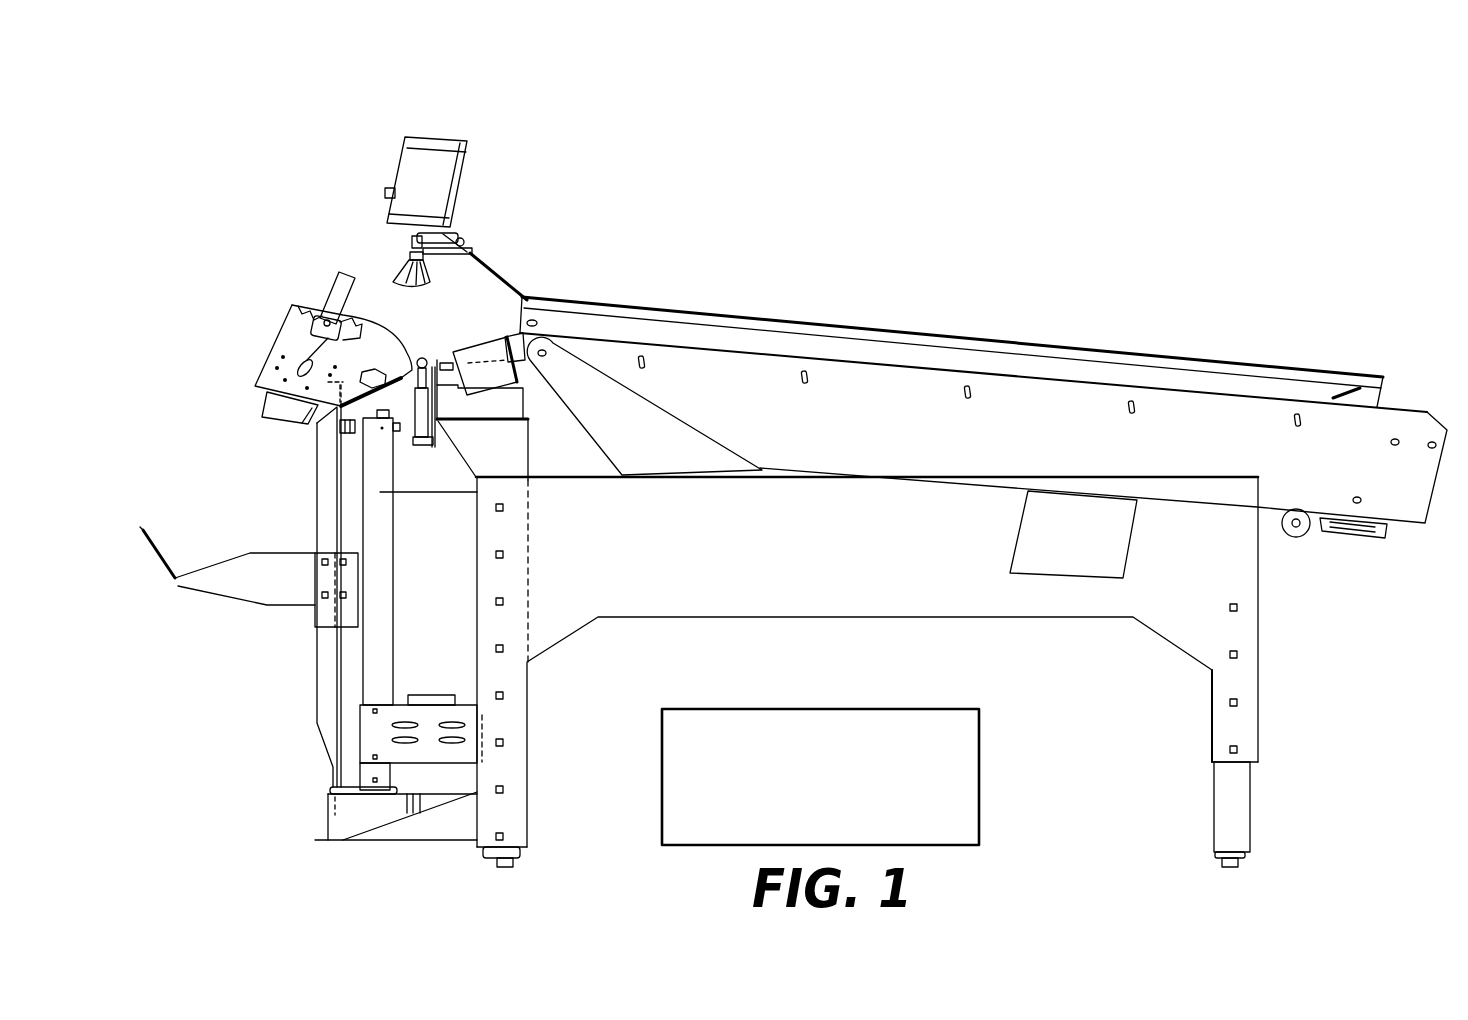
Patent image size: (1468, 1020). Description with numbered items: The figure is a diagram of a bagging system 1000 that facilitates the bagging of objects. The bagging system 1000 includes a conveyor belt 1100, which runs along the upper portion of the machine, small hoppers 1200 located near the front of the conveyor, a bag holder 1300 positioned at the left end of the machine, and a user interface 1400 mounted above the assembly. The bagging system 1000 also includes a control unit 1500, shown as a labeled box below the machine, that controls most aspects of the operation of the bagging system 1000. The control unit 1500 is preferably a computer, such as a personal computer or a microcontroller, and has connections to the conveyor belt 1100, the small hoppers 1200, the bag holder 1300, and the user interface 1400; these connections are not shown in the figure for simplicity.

The bagging system 1000 is at (1263, 86).
The conveyor belt 1100 is at (1004, 308).
The small hoppers 1200 is at (550, 239).
The bag holder 1300 is at (228, 354).
The user interface 1400 is at (446, 126).
The control unit 1500 is at (982, 740).